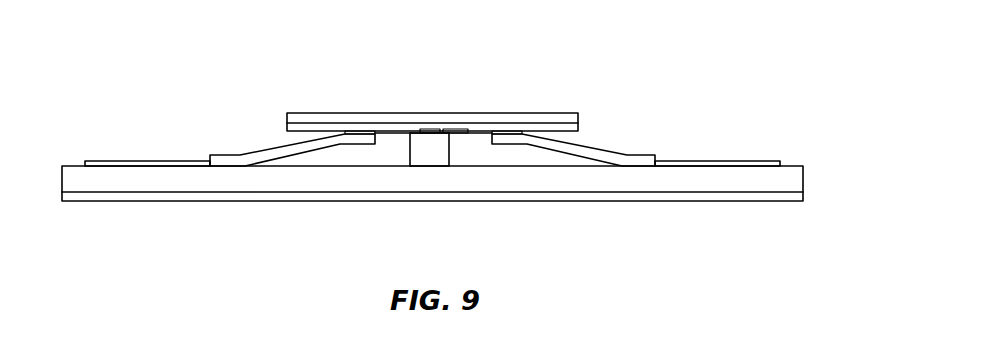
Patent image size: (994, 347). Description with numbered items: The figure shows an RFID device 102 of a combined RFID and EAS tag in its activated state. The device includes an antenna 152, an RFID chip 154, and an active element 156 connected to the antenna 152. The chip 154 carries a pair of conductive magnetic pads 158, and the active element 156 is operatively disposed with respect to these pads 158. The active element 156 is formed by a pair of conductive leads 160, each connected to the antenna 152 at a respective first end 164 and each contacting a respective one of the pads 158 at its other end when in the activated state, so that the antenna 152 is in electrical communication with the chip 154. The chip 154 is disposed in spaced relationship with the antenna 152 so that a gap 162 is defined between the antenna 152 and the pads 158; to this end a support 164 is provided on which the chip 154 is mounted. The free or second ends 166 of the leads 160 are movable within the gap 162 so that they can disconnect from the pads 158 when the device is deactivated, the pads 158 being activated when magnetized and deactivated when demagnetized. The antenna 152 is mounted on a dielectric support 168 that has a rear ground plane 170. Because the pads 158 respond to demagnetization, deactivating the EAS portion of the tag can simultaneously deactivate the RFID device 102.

The RFID device 102 is at (562, 53).
The antenna 152 is at (128, 160).
The RFID chip 154 is at (578, 124).
The active element 156 is at (633, 142).
The conductive magnetic pads 158 is at (285, 130).
The conductive leads 160 is at (315, 167).
The gap 162 is at (470, 142).
The support 164 is at (227, 167).
The second ends 166 is at (373, 130).
The dielectric support 168 is at (792, 183).
The rear ground plane 170 is at (747, 202).